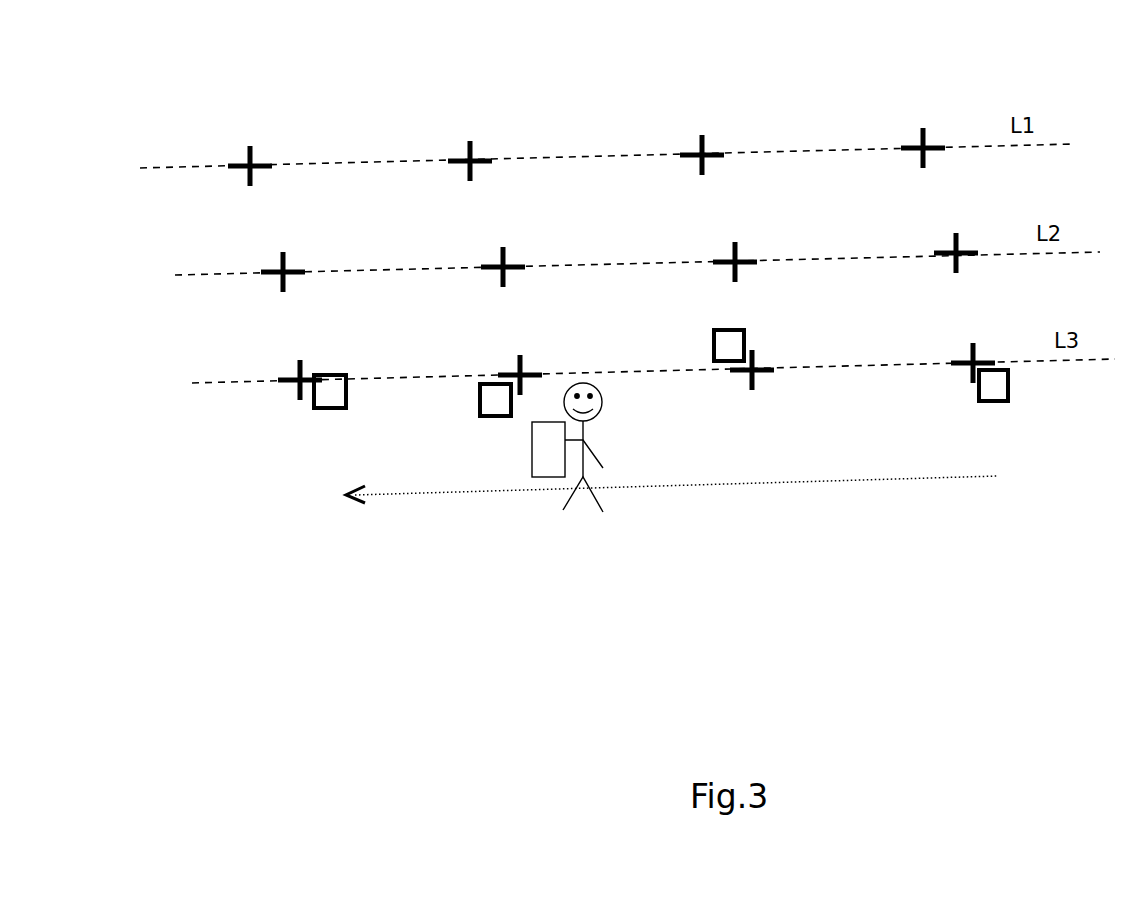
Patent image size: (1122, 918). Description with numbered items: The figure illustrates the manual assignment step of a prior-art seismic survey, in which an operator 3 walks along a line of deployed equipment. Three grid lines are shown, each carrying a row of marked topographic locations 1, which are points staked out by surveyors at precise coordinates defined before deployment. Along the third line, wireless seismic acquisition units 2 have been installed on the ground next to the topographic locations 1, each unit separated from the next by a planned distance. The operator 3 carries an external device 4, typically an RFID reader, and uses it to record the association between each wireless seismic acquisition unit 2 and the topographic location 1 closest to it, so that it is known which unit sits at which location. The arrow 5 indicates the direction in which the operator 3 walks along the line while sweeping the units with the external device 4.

The topographic location 1 is at (235, 148).
The wireless seismic acquisition unit 2 is at (998, 403).
The operator 3 is at (588, 510).
The external device 4 is at (541, 466).
The arrow 5 is at (871, 487).